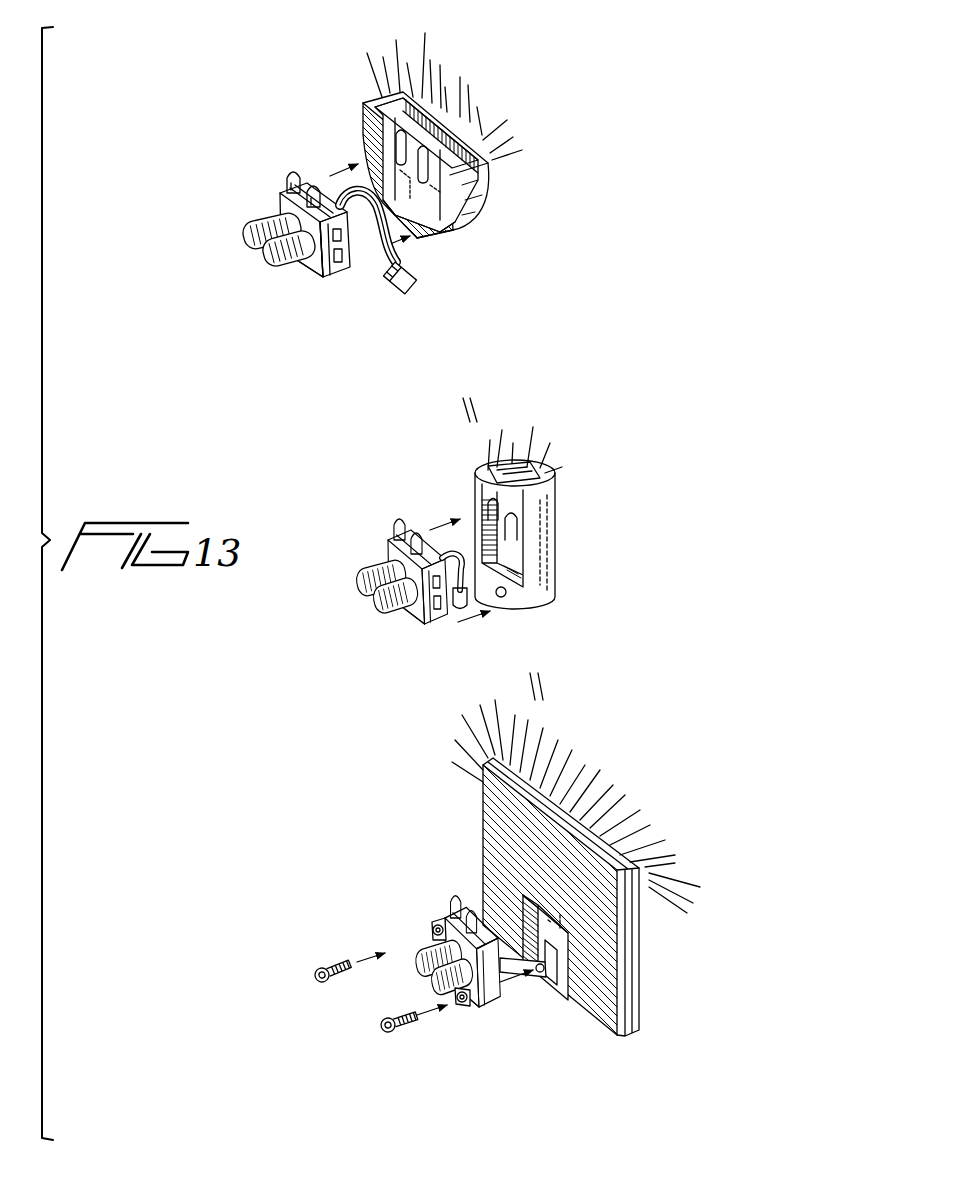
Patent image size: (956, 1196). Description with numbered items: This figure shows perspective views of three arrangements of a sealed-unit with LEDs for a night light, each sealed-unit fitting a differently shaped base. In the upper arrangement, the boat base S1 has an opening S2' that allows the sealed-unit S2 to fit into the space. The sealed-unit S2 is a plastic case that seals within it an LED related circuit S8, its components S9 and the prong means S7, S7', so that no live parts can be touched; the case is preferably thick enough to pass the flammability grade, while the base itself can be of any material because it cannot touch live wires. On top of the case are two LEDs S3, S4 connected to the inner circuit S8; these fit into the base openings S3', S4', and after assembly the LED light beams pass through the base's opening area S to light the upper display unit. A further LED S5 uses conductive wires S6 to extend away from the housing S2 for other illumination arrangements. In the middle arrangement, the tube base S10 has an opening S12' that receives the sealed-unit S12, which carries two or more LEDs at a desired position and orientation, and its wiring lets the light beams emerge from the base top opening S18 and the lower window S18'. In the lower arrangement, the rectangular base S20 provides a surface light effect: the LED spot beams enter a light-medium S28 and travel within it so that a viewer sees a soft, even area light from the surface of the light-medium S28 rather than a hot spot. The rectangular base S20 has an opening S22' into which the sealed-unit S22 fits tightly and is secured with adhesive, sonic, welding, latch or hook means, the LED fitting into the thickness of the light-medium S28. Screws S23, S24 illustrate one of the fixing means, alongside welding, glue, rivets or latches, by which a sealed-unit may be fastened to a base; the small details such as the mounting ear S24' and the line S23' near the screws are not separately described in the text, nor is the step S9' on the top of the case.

The opening area S is at (488, 160).
The boat base S1 is at (482, 130).
The sealed-unit S2 is at (293, 275).
The opening S2' is at (481, 251).
The LED S3 is at (301, 130).
The base opening S3' is at (381, 99).
The LED S4 is at (321, 152).
The base opening S4' is at (448, 123).
The LED S5 is at (412, 280).
The conductive wires S6 is at (376, 272).
The prong means S7 is at (222, 263).
The prong means S7' is at (218, 214).
The LED related circuit S8 is at (320, 282).
The components S9 is at (354, 309).
The connector top step S9' is at (266, 178).
The tube base S10 is at (556, 592).
The sealed-unit S12 is at (400, 603).
The opening S12' is at (570, 535).
The base top opening S18 is at (567, 437).
The lower window S18' is at (479, 641).
The rectangular base S20 is at (625, 857).
The sealed-unit S22 is at (439, 920).
The opening S22' is at (620, 947).
The screw S23 is at (362, 1067).
The lower screw hole S23' is at (479, 1052).
The screw S24 is at (278, 953).
The upper screw hole S24' is at (375, 903).
The light-medium S28 is at (540, 850).